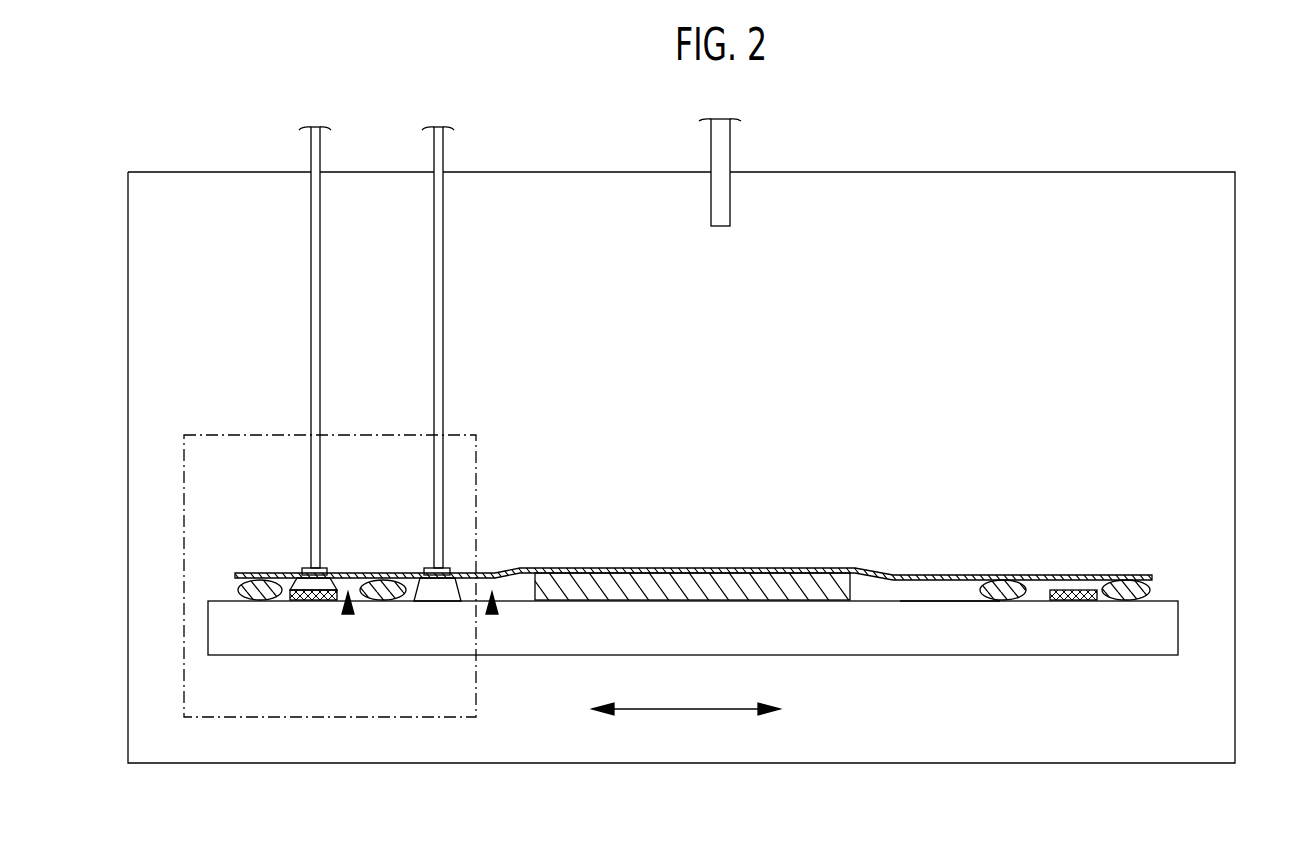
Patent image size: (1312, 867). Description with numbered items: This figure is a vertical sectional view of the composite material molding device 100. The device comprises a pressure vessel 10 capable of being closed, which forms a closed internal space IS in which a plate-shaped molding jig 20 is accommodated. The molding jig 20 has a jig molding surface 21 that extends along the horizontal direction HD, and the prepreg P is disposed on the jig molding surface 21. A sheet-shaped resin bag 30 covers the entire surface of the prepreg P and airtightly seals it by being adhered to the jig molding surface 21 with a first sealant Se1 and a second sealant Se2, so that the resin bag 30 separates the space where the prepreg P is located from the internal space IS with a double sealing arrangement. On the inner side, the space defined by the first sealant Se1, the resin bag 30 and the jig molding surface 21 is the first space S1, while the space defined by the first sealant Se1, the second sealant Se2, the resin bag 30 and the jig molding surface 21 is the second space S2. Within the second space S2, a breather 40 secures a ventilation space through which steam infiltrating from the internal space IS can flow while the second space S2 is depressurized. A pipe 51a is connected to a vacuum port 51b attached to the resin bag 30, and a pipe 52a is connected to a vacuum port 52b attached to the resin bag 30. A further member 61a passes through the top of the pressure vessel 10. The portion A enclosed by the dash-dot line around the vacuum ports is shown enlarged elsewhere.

The composite material molding device 100 is at (1186, 149).
The pressure vessel 10 is at (1120, 765).
The internal space IS is at (1047, 318).
The molding jig 20 is at (1061, 645).
The jig molding surface 21 is at (952, 600).
The resin bag 30 is at (882, 568).
The prepreg P is at (672, 568).
The first sealant Se1 is at (1003, 580).
The second sealant Se2 is at (1126, 580).
The breather 40 is at (1073, 590).
The pipe 52a is at (311, 270).
The pipe 51a is at (443, 268).
The vacuum port (second depressurization port) 52b is at (305, 568).
The vacuum port (first depressurization port) 51b is at (428, 568).
The nozzle / bar member 61a is at (730, 207).
The portion A is at (366, 432).
The second space S2 is at (348, 612).
The first space S1 is at (492, 612).
The horizontal direction HD is at (686, 725).